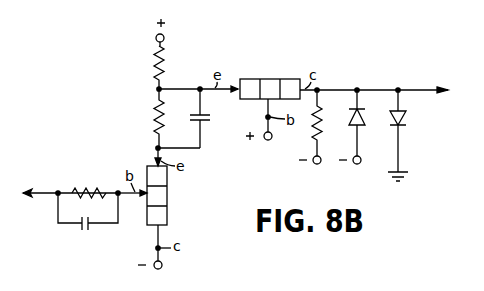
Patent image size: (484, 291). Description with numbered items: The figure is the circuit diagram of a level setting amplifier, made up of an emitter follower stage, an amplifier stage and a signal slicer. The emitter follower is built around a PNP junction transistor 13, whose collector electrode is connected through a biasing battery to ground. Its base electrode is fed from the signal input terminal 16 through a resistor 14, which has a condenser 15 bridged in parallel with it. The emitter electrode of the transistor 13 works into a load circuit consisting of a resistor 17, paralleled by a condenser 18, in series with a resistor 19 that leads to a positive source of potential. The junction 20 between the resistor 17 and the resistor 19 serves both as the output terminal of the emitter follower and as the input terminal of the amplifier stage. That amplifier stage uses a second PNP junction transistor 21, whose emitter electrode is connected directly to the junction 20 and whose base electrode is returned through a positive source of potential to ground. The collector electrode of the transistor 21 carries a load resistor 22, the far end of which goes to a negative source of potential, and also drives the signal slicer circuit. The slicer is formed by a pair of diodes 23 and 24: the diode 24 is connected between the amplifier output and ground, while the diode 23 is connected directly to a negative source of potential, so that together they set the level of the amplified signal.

The PNP junction transistor 13 is at (168, 201).
The resistor 14 is at (82, 190).
The condenser 15 is at (86, 232).
The signal input terminal 16 is at (30, 192).
The resistor 17 is at (158, 118).
The condenser 18 is at (210, 117).
The resistor 19 is at (163, 57).
The junction 20 is at (162, 87).
The PNP junction transistor 21 is at (266, 79).
The load resistor 22 is at (318, 128).
The diode 23 is at (360, 116).
The diode 24 is at (402, 117).